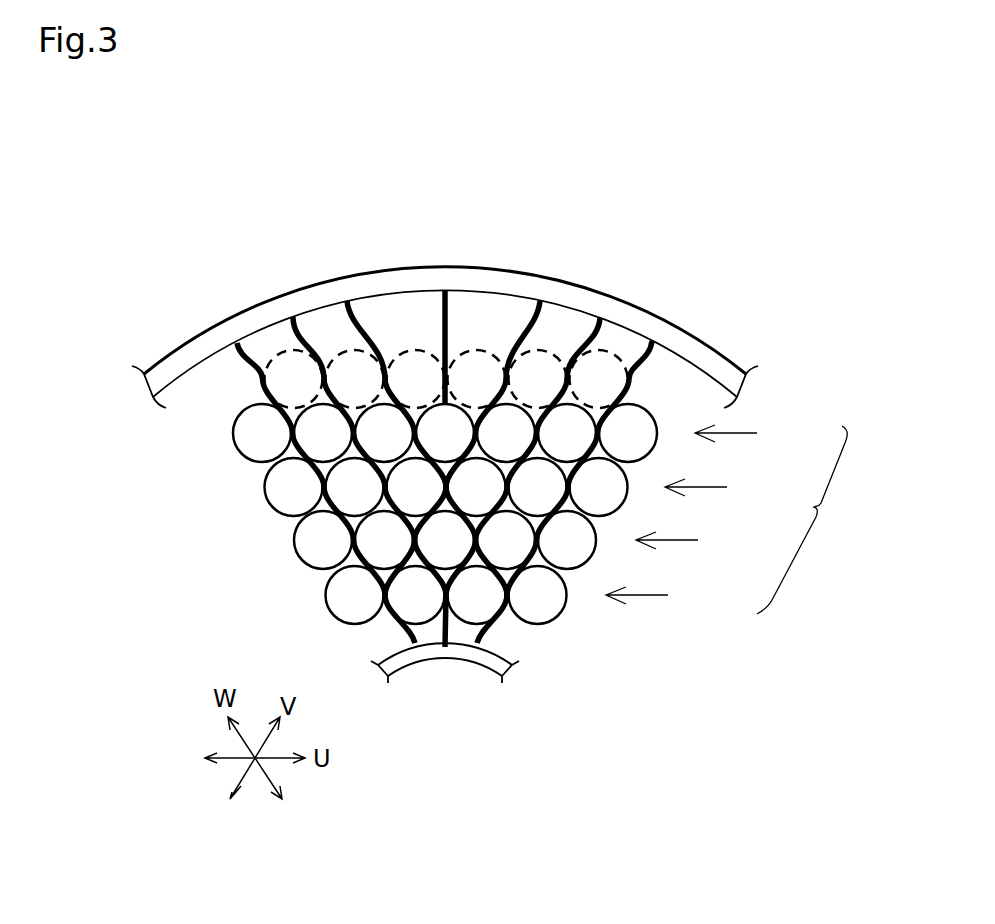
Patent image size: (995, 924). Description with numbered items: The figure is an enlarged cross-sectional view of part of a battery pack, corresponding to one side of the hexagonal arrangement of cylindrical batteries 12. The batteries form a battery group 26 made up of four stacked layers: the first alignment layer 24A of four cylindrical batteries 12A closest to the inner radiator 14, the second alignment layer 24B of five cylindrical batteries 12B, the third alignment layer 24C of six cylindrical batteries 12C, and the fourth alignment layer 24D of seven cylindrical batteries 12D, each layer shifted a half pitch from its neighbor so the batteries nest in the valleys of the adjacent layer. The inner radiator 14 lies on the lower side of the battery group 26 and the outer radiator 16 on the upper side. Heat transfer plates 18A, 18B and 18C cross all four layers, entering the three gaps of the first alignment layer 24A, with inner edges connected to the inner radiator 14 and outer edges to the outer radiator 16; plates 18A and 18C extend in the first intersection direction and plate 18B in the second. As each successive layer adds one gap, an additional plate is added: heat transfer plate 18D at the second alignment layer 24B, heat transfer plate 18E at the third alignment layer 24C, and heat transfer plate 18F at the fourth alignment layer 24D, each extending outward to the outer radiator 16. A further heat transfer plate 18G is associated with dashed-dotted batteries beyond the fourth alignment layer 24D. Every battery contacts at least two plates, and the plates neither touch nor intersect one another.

The cylindrical batteries 12 is at (262, 391).
The cylindrical batteries of the first alignment layer 12A is at (340, 595).
The cylindrical batteries of the second alignment layer 12B is at (313, 540).
The cylindrical batteries of the third alignment layer 12C is at (280, 487).
The cylindrical batteries of the fourth alignment layer 12D is at (250, 433).
The inner radiator 14 is at (489, 661).
The outer radiator 16 is at (500, 287).
The heat transfer plate 18A is at (620, 345).
The heat transfer plate 18B is at (250, 352).
The heat transfer plate 18C is at (598, 337).
The heat transfer plate 18D is at (320, 352).
The heat transfer plate 18E is at (540, 322).
The heat transfer plate 18F is at (357, 324).
The heat transfer plate 18G is at (448, 316).
The first alignment layer 24A is at (667, 598).
The second alignment layer 24B is at (696, 543).
The third alignment layer 24C is at (726, 489).
The fourth alignment layer 24D is at (756, 435).
The battery group 26 is at (807, 520).